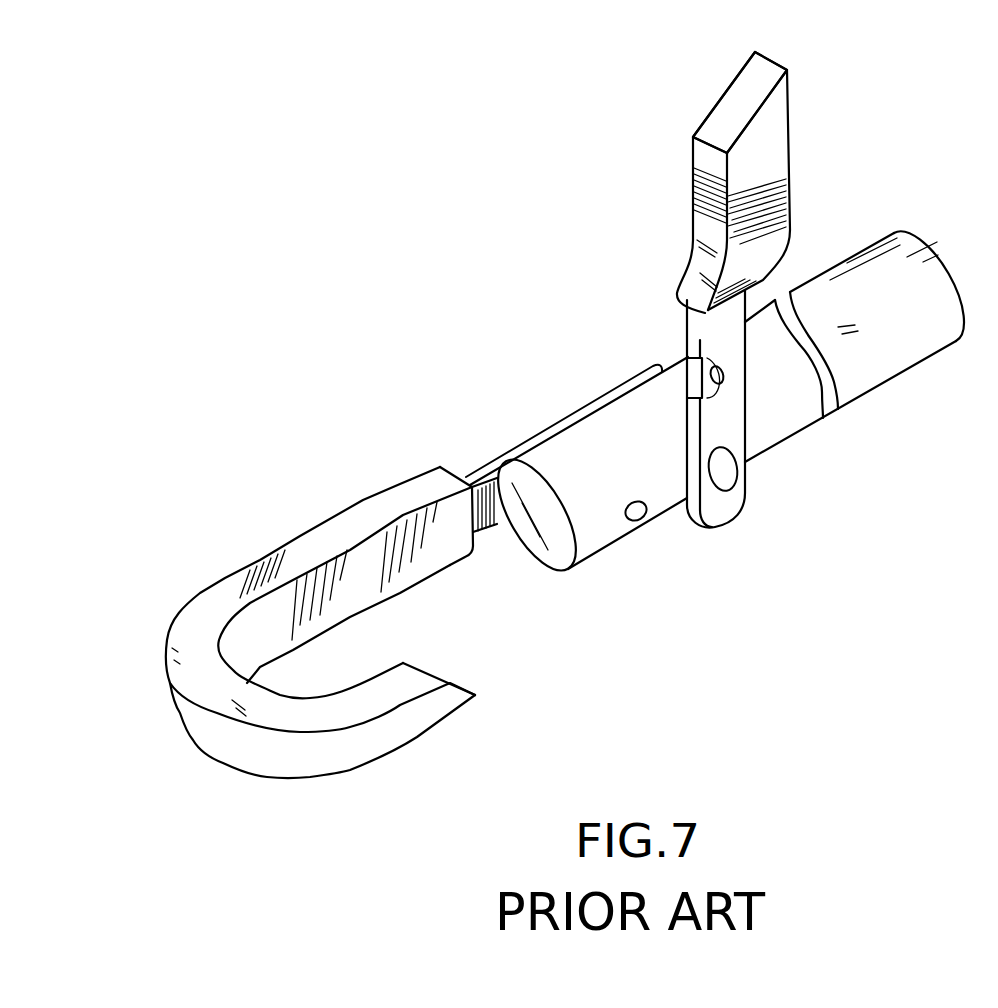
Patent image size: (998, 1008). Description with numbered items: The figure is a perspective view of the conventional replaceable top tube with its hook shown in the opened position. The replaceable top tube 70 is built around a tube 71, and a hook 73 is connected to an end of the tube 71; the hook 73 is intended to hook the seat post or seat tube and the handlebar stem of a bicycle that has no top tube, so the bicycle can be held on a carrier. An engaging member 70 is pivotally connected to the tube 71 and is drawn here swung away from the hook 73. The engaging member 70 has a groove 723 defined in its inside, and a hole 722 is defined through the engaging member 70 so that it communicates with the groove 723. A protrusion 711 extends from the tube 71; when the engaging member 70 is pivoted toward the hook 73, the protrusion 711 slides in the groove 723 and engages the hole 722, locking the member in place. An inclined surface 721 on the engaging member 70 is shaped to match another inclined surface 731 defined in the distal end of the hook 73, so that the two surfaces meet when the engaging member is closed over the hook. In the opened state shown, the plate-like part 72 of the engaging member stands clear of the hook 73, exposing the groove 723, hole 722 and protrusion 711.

The engaging member 70 is at (772, 548).
The tube 71 is at (918, 343).
The protrusion 711 is at (640, 520).
The locking plate 72 is at (783, 165).
The inclined surface 721 is at (722, 120).
The hole 722 is at (720, 378).
The groove 723 is at (688, 388).
The hook 73 is at (165, 643).
The inclined surface 731 is at (453, 690).